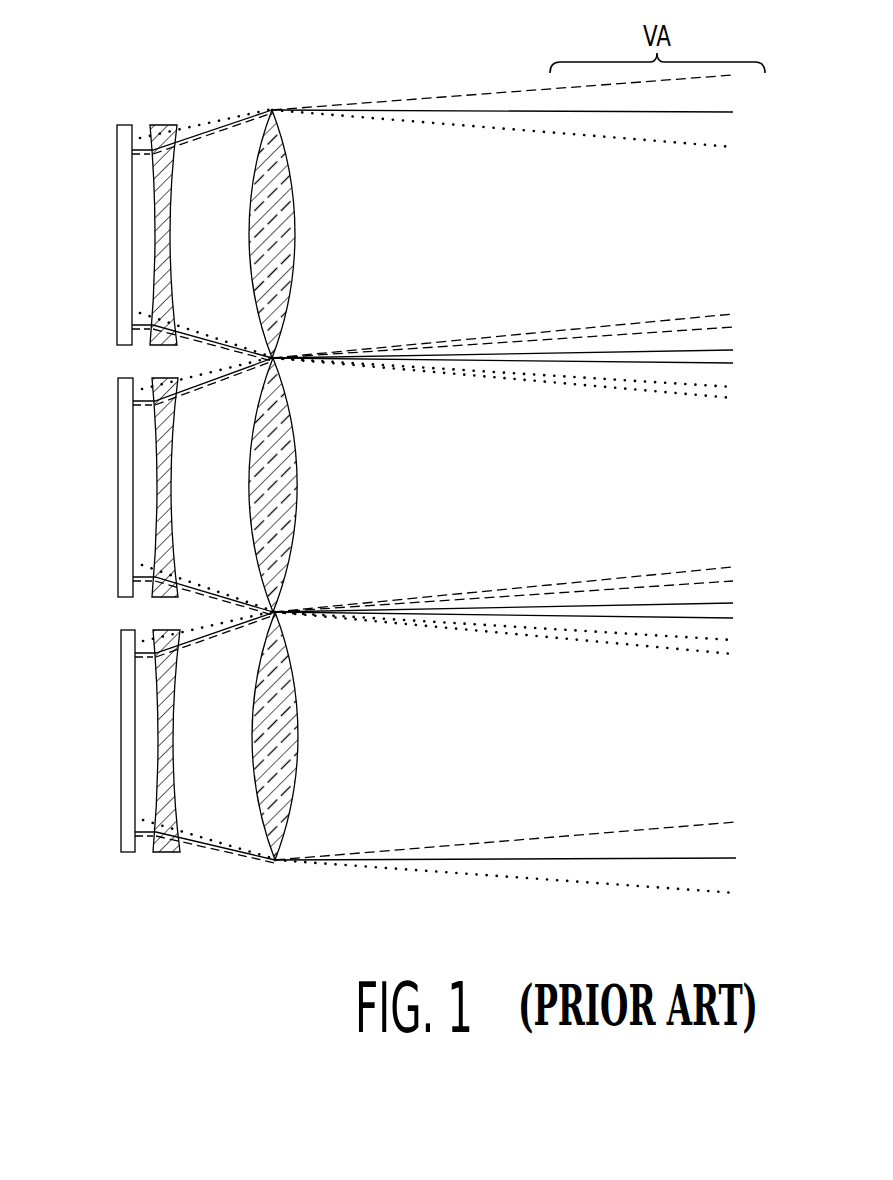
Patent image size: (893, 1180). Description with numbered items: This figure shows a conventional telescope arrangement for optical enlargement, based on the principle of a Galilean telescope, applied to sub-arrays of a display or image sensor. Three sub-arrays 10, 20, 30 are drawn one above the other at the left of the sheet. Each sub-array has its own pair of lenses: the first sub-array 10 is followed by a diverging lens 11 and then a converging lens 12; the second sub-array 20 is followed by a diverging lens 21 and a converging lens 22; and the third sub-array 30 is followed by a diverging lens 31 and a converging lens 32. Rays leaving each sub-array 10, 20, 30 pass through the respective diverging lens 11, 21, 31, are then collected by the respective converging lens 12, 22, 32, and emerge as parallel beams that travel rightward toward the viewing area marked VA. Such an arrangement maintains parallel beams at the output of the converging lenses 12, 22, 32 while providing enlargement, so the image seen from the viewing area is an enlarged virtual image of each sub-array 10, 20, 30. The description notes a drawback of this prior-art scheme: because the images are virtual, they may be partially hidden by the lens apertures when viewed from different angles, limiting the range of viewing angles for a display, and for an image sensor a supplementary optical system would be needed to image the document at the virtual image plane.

The sub-array 10 is at (117, 171).
The diverging lens 11 is at (160, 125).
The converging lens 12 is at (295, 232).
The sub-array 20 is at (118, 423).
The diverging lens 21 is at (162, 378).
The converging lens 22 is at (296, 484).
The sub-array 30 is at (121, 677).
The diverging lens 31 is at (163, 630).
The converging lens 32 is at (298, 739).